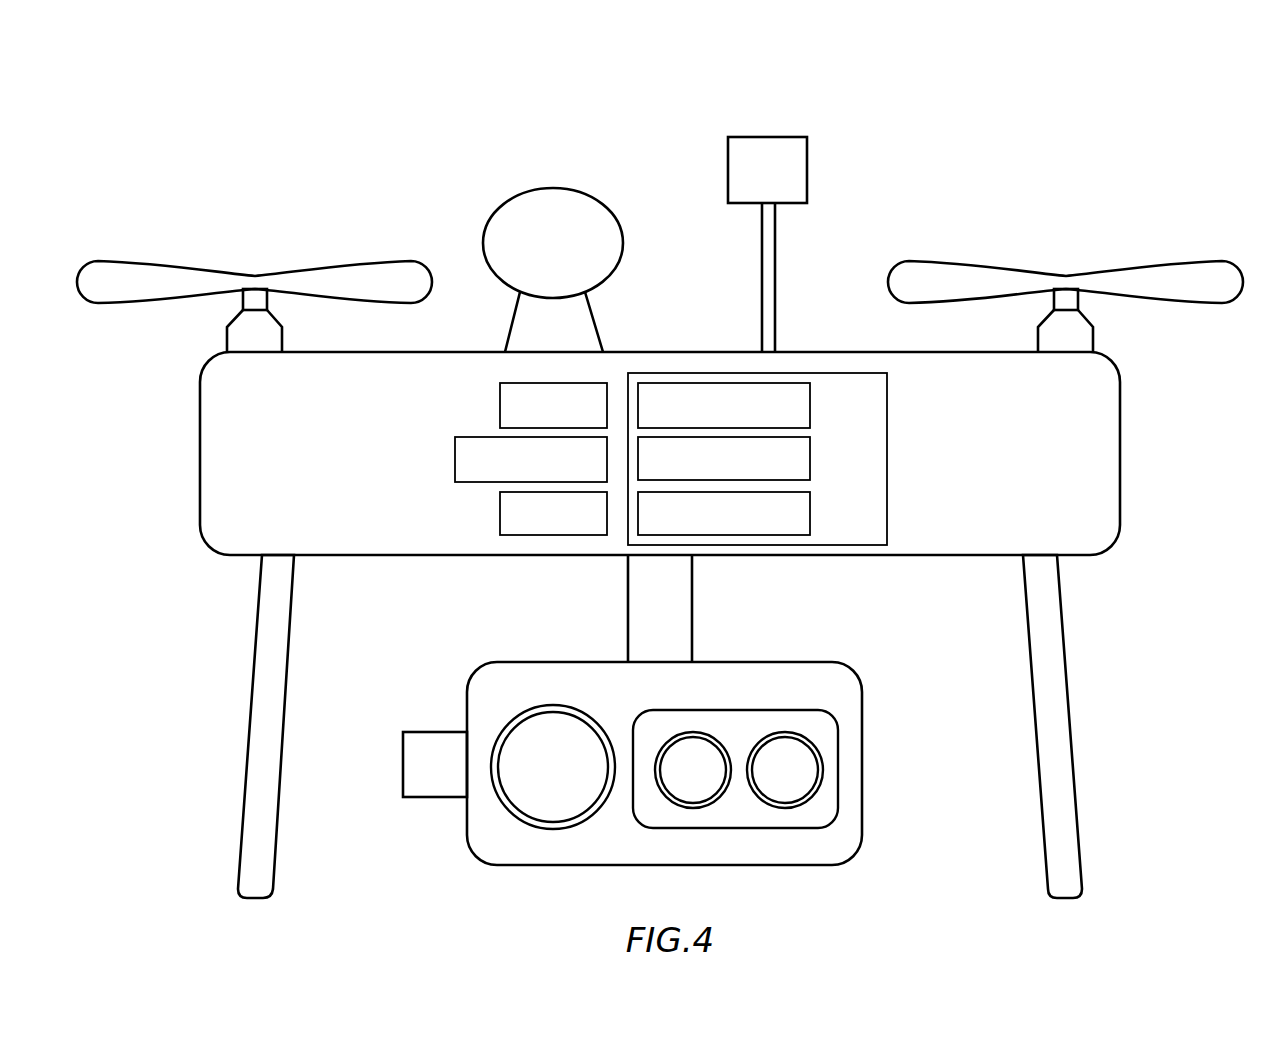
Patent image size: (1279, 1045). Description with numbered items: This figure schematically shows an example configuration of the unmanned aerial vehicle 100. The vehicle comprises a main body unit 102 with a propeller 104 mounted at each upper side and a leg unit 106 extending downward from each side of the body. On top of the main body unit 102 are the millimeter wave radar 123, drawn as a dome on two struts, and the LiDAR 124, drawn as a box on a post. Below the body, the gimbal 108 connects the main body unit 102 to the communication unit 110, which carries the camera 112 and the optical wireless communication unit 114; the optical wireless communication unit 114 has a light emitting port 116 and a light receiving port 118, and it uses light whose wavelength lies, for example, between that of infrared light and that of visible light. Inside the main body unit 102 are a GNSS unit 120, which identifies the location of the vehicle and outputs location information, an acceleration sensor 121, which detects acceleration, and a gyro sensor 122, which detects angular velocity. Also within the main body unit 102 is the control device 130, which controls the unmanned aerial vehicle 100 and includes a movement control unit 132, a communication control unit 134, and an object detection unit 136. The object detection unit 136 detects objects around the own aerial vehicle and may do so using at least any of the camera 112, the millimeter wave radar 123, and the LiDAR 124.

The unmanned aerial vehicle 100 is at (142, 53).
The main body unit 102 is at (1122, 401).
The propeller 104 is at (402, 261).
The leg unit 106 is at (292, 638).
The gimbal 108 is at (698, 623).
The communication unit 110 is at (662, 763).
The camera 112 is at (556, 706).
The optical wireless communication unit 114 is at (739, 710).
The light emitting port 116 is at (693, 731).
The light receiving port 118 is at (789, 731).
The GNSS unit 120 is at (498, 411).
The acceleration sensor 121 is at (454, 464).
The gyro sensor 122 is at (498, 516).
The millimeter wave radar 123 is at (556, 187).
The LiDAR 124 is at (775, 136).
The control device 130 is at (787, 459).
The movement control unit 132 is at (815, 411).
The communication control unit 134 is at (815, 464).
The object detection unit 136 is at (815, 516).